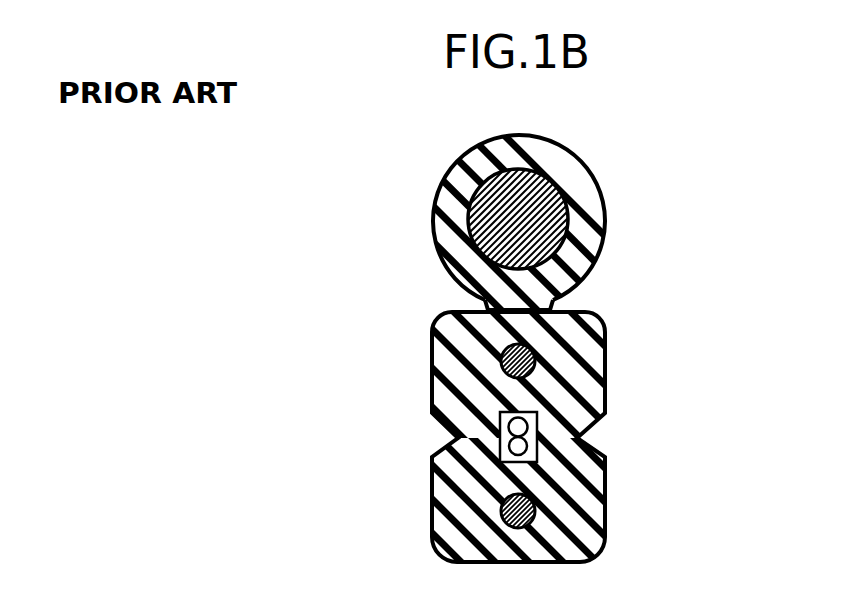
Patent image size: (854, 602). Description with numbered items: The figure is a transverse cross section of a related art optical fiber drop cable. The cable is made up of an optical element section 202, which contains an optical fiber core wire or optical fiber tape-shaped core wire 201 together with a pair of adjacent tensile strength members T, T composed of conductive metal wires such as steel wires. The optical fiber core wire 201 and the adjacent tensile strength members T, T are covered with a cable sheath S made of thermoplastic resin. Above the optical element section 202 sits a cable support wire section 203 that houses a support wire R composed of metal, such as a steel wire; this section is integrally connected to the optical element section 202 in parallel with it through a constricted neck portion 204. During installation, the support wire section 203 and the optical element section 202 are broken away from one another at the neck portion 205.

The optical fiber core wire 201 is at (602, 395).
The optical element section 202 is at (416, 397).
The cable support wire section 203 is at (413, 215).
The constricted neck portion 204 is at (466, 298).
The neck portion 205 is at (443, 438).
The support wire R is at (553, 215).
The cable sheath S is at (592, 232).
The tensile strength member T is at (540, 362).